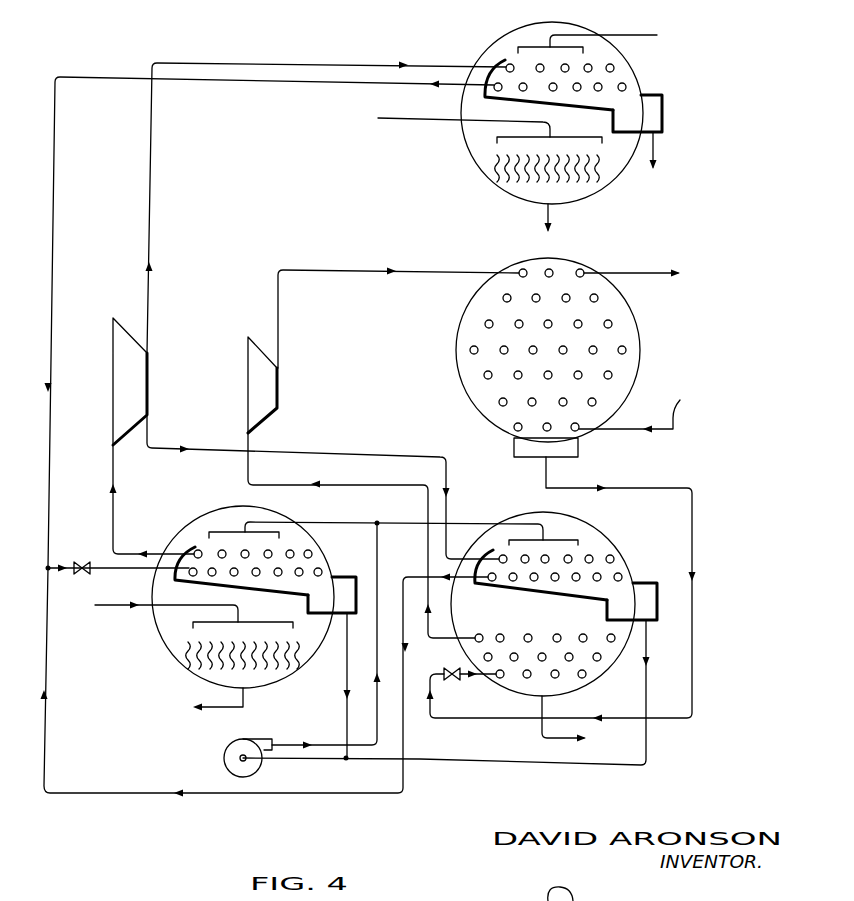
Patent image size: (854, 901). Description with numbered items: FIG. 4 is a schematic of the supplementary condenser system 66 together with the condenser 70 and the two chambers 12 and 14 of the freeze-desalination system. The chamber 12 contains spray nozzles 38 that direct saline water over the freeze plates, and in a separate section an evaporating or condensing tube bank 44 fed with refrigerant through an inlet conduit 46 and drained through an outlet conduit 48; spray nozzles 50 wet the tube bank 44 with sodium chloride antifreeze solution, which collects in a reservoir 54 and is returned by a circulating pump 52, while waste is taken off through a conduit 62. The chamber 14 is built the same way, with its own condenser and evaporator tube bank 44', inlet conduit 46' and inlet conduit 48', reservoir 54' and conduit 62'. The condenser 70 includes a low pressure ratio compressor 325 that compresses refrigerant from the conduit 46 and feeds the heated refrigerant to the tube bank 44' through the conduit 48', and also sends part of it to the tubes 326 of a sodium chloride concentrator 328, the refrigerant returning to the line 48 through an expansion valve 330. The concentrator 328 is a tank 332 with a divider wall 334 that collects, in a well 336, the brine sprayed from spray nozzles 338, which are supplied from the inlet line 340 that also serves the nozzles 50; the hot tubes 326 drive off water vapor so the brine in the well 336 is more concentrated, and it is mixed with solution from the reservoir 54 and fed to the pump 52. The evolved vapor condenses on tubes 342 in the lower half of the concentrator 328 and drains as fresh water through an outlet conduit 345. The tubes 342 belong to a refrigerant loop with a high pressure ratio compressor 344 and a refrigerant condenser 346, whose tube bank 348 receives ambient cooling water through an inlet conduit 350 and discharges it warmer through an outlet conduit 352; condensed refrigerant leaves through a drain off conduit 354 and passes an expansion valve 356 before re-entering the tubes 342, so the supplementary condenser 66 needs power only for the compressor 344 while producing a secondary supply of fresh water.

The chamber 12 is at (196, 517).
The second chamber 14 is at (471, 158).
The spray nozzles 38 is at (253, 620).
The evaporating or condensing tube bank 44 is at (242, 574).
The condenser and evaporator tube bank 44' is at (548, 91).
The inlet conduit 46 is at (145, 532).
The inlet conduit 46' is at (268, 437).
The outlet conduit 48 is at (69, 587).
The inlet conduit 48' is at (326, 188).
The spray nozzles 50 is at (233, 530).
The circulating pump 52 is at (229, 762).
The reservoir 54 is at (334, 647).
The reservoir 54' is at (664, 132).
The conduit 62 is at (244, 702).
The conduit 62' is at (578, 218).
The supplementary condenser system 66 is at (428, 411).
The condenser 70 is at (194, 352).
The low pressure ratio compressor 325 is at (138, 386).
The tubes 326 is at (511, 580).
The sodium chloride concentrator 328 is at (667, 529).
The expansion valve 330 is at (80, 562).
The tank 332 is at (625, 558).
The divider wall 334 is at (557, 598).
The well 336 is at (647, 607).
The spray nozzles 338 is at (562, 535).
The inlet line 340 is at (378, 563).
The tubes 342 is at (538, 625).
The high pressure ratio compressor 344 is at (272, 388).
The outlet conduit 345 is at (540, 722).
The refrigerant condenser 346 is at (512, 265).
The tube bank 348 is at (486, 322).
The inlet conduit 350 is at (634, 404).
The outlet conduit 352 is at (632, 272).
The drain off conduit 354 is at (543, 474).
The expansion valve 356 is at (457, 680).